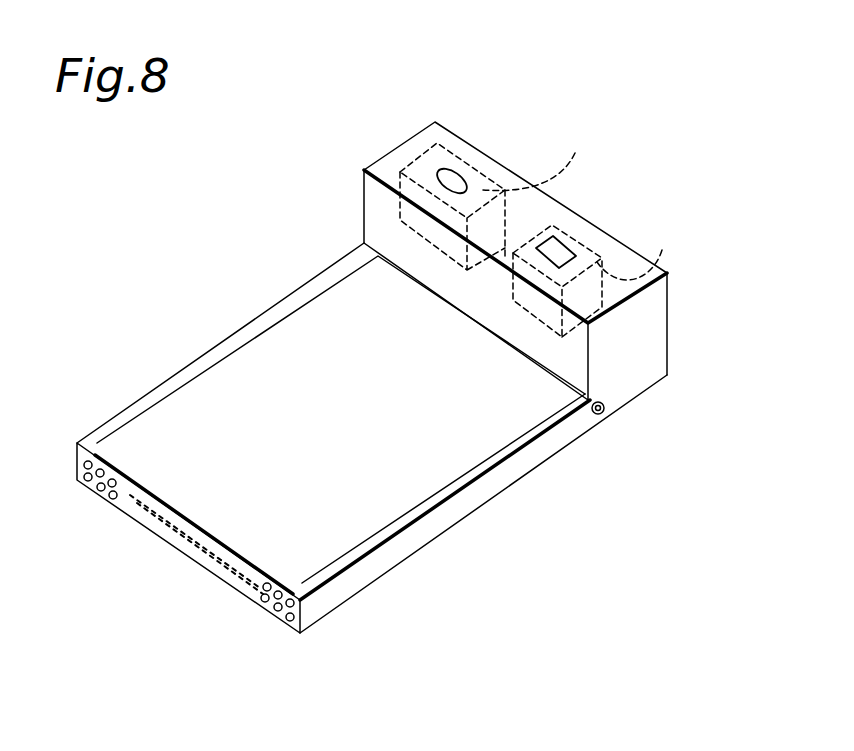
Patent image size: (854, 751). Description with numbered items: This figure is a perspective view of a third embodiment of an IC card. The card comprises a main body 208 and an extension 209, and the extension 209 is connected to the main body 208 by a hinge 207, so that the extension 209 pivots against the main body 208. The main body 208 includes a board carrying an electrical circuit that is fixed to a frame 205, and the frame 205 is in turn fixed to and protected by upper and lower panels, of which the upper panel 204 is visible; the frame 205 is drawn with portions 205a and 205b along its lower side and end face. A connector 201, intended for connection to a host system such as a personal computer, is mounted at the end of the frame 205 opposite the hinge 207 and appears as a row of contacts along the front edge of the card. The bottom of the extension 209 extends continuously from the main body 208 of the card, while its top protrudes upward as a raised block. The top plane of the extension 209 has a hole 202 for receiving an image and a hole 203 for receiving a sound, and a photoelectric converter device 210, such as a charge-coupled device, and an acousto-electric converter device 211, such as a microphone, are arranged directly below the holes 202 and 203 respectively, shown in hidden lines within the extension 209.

The connector 201 is at (280, 612).
The hole for receiving an image 202 is at (455, 178).
The hole for receiving a sound 203 is at (560, 252).
The upper panel 204 is at (483, 415).
The frame 205 is at (505, 525).
The lower housing portion 205a is at (387, 555).
The side face of housing 205b is at (637, 357).
The hinge 207 is at (610, 412).
The main body 208 is at (175, 320).
The extension 209 is at (352, 197).
The photoelectric converter device 210 is at (545, 160).
The acousto-electric converter device 211 is at (651, 251).